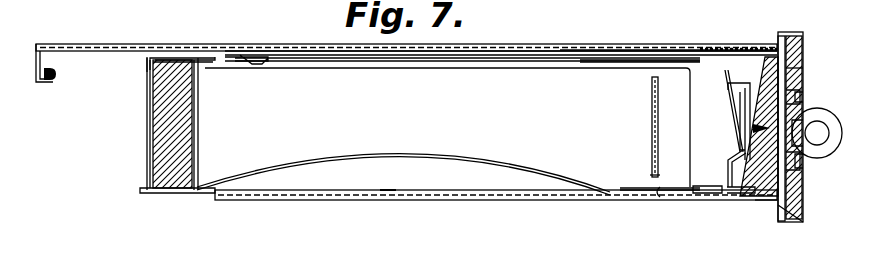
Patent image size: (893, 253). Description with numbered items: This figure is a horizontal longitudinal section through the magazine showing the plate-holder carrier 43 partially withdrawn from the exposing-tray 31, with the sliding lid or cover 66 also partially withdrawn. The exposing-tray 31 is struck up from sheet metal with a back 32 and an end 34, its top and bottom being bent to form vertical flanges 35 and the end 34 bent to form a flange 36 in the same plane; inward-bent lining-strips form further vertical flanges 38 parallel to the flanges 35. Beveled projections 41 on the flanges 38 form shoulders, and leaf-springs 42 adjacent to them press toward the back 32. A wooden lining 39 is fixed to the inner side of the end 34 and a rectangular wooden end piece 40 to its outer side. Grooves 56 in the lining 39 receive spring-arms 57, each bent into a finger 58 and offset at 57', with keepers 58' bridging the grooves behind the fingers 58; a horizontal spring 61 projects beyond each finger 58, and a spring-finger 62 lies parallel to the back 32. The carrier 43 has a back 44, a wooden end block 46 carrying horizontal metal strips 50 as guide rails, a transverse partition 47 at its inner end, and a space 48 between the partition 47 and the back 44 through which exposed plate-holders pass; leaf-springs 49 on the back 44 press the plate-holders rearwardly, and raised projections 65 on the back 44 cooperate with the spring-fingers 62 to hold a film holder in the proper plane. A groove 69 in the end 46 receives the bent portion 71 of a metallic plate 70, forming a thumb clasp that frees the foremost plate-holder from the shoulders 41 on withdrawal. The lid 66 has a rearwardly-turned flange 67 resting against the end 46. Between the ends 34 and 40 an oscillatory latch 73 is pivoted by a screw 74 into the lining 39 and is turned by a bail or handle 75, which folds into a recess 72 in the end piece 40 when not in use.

The lid or cover 66 is at (107, 41).
The rearwardly-turned flange 67 is at (44, 61).
The groove or recess 69 is at (148, 70).
The metallic plate 70 is at (147, 125).
The block of wood 46 is at (158, 163).
The horizontal metal strips 50 is at (198, 128).
The bent portion 71 is at (181, 57).
The magazine-plate-holder carrier 43 is at (212, 170).
The leaf-springs 42 is at (436, 56).
The beveled projections 41 is at (262, 60).
The leaf-springs 49 is at (329, 161).
The back 32 is at (388, 195).
The back 44 is at (400, 193).
The vertical flanges 35 is at (581, 53).
The vertical flanges 38 is at (623, 62).
The flange 36 is at (752, 50).
The oscillatory latch 73 is at (778, 50).
The transverse partition 47 is at (652, 117).
The space 48 is at (650, 178).
The horizontal spring 61 is at (717, 72).
The finger 58 is at (722, 115).
The keepers 58' is at (719, 120).
The spring-arm 57 is at (739, 126).
The offset portions 57' is at (723, 163).
The spring-finger 62 is at (724, 175).
The raised projections 65 is at (650, 196).
The exposing-tray 31 is at (676, 209).
The lining 39 is at (762, 178).
The end 34 is at (768, 201).
The rectangular wooden end piece 40 is at (814, 41).
The grooves 56 is at (785, 71).
The recess 72 is at (803, 97).
The bail or handle 75 is at (817, 133).
The pivoted screw 74 is at (805, 162).